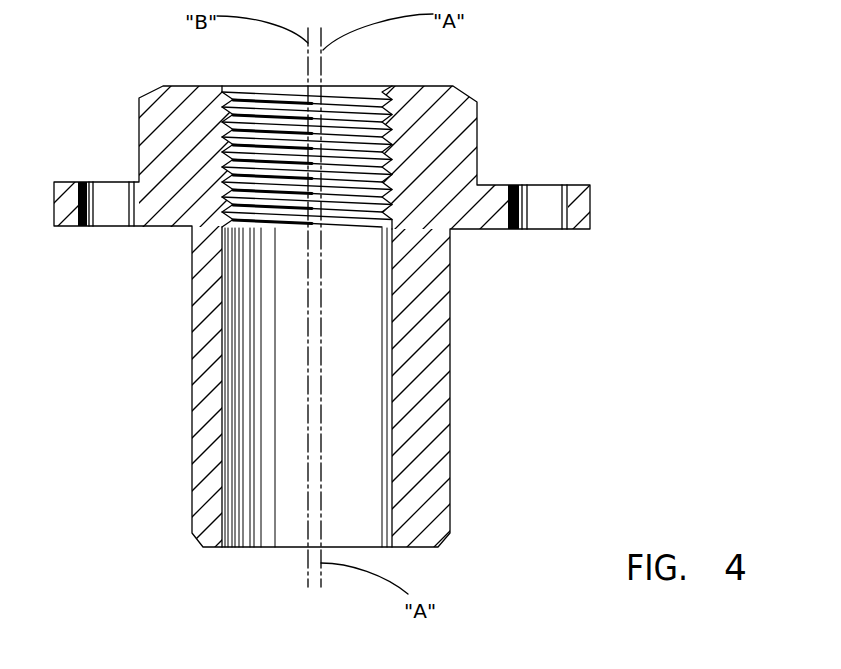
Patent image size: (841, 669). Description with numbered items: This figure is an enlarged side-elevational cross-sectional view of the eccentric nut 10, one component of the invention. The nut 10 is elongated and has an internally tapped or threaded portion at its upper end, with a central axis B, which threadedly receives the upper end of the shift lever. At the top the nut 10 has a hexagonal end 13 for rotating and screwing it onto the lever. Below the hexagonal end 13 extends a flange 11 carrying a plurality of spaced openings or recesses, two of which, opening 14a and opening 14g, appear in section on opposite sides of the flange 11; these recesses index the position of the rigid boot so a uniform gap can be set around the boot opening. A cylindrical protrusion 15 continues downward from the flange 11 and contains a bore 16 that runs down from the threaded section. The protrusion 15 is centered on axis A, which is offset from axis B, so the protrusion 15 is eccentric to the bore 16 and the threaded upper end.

The eccentric nut 10 is at (452, 344).
The flange 11 is at (577, 207).
The top hexagonal end 13 is at (440, 102).
The opening or recess 14a is at (128, 210).
The opening or recess 14g is at (518, 210).
The cylindrical protrusion 15 is at (432, 463).
The bore 16 is at (390, 360).